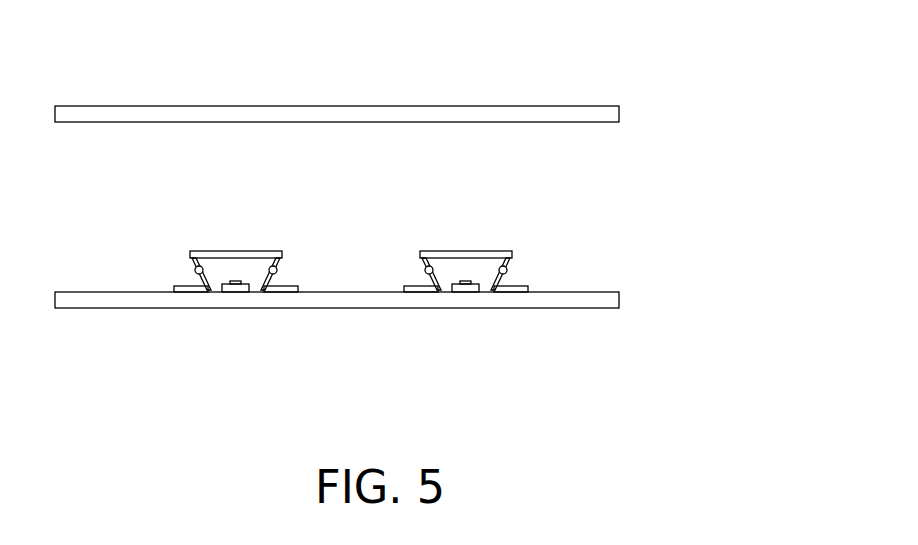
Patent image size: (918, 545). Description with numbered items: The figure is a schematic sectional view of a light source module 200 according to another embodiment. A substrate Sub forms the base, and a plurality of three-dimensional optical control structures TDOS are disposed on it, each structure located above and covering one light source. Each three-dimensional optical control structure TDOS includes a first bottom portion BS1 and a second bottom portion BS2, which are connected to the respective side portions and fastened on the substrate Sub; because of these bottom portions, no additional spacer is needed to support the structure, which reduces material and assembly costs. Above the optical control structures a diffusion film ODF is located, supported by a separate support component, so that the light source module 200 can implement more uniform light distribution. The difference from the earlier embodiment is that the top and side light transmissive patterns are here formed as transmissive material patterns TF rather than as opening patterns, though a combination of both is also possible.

The diffusion film ODF is at (619, 112).
The substrate Sub is at (619, 300).
The transmissive material pattern TF is at (213, 251).
The three-dimensional optical control structure TDOS is at (283, 256).
The first bottom portion BS1 is at (511, 297).
The second bottom portion BS2 is at (412, 297).
The light source module 200 is at (708, 428).